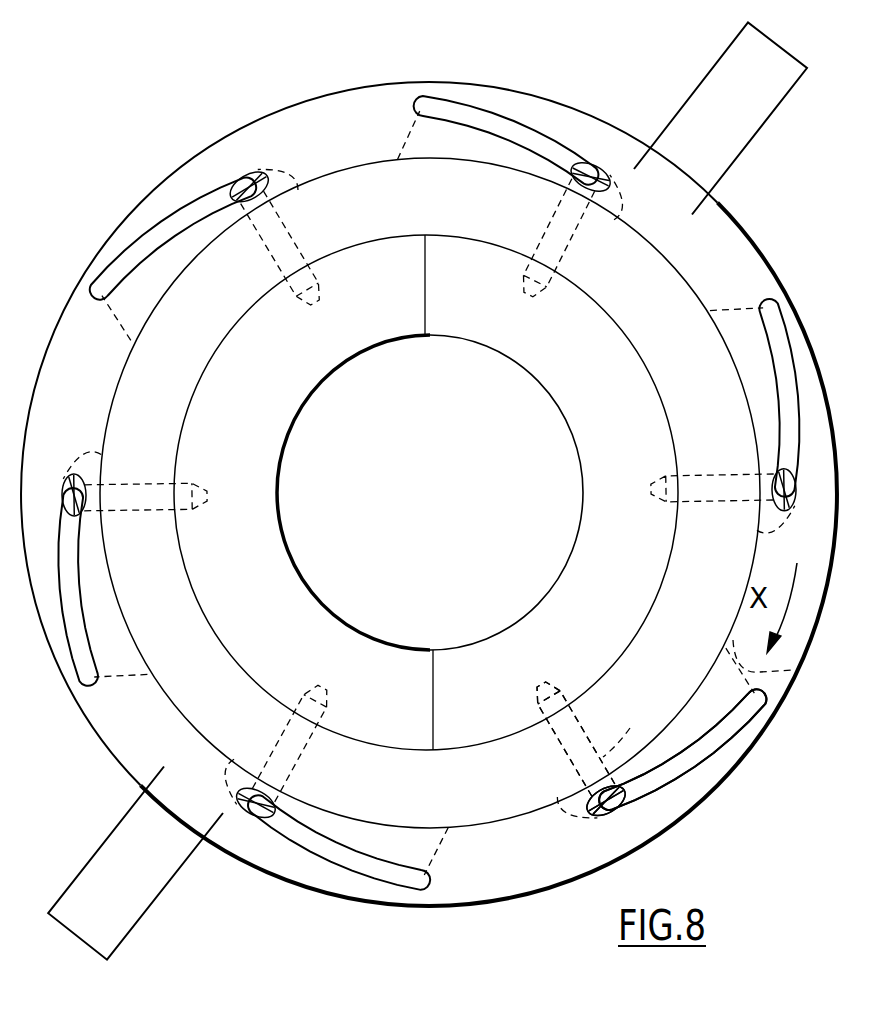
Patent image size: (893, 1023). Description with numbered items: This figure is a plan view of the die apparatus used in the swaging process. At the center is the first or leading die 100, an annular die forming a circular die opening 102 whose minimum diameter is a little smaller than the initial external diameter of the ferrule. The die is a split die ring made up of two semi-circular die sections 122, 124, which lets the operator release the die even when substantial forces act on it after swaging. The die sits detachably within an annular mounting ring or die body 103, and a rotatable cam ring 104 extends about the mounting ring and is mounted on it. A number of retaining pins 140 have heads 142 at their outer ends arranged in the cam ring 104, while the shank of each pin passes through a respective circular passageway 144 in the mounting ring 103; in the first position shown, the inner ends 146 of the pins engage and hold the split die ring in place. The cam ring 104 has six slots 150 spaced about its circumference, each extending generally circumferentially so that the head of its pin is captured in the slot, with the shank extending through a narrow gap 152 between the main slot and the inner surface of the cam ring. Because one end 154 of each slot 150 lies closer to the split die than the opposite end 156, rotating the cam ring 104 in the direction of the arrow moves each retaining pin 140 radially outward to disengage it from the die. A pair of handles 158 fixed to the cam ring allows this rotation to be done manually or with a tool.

The first die 100 is at (579, 410).
The circular die opening 102 is at (459, 607).
The mounting ring 103 is at (677, 272).
The cam ring 104 is at (720, 207).
The semi-circular die section 122 is at (266, 432).
The semi-circular die section 124 is at (600, 367).
The retaining pin 140 is at (720, 487).
The head 142 is at (787, 485).
The circular passageway 144 is at (622, 748).
The inner end 146 is at (540, 680).
The slot 150 is at (785, 367).
The gap 152 is at (793, 672).
The end of slot 154 is at (592, 800).
The opposite end of slot 156 is at (753, 695).
The handle 158 is at (707, 95).